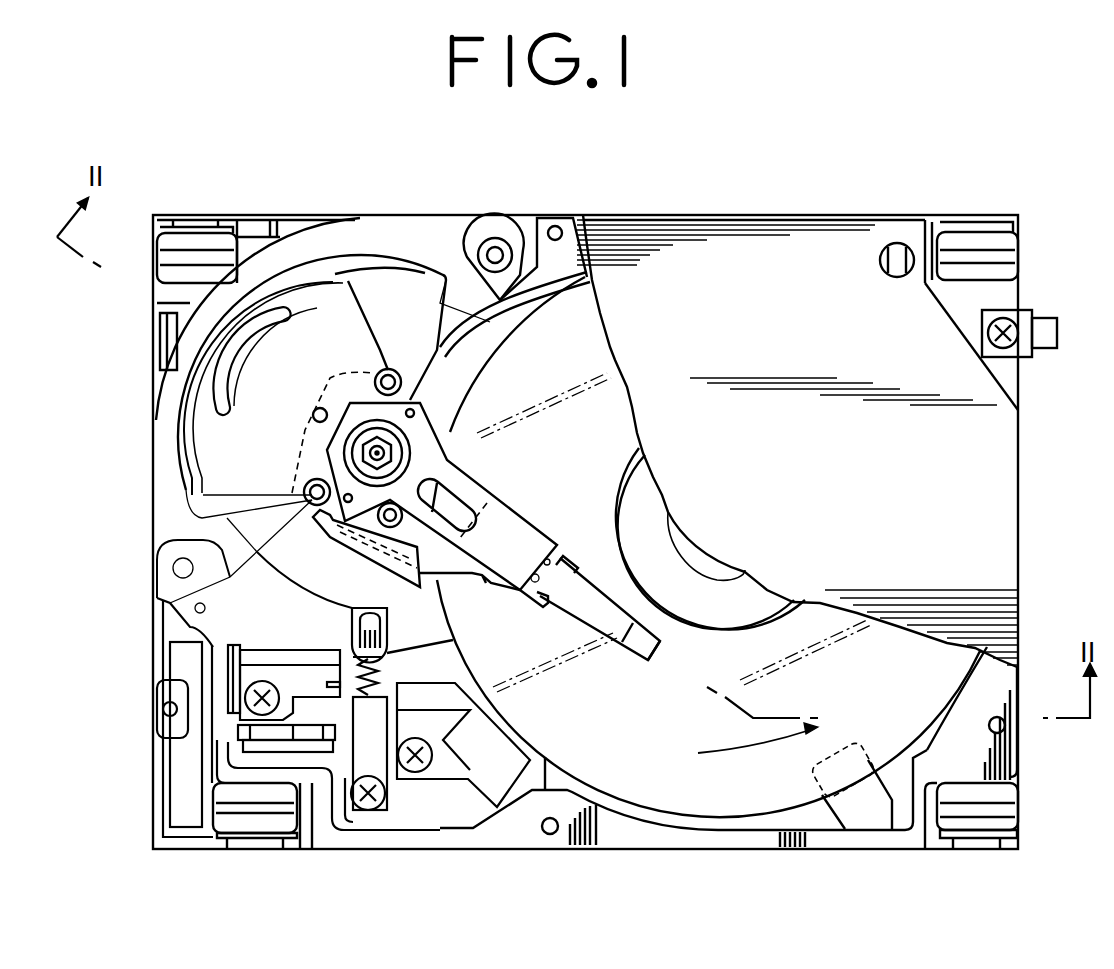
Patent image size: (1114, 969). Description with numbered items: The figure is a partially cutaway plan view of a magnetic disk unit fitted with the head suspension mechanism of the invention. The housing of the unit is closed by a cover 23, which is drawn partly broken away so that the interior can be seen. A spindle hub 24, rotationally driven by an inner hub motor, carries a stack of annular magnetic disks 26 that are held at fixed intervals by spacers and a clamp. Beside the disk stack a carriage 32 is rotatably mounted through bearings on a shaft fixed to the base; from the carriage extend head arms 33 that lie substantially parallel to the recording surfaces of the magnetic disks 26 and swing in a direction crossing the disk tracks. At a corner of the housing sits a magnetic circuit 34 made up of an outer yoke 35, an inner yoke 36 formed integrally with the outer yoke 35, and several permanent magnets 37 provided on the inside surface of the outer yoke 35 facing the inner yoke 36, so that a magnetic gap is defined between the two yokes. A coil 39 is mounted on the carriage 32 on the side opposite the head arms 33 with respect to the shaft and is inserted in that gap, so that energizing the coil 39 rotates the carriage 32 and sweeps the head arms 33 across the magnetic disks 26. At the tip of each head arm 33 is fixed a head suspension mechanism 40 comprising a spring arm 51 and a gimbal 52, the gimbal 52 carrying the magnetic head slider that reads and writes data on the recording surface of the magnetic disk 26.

The cover 23 is at (790, 255).
The spindle hub 24 is at (700, 640).
The magnetic disk 26 is at (698, 805).
The carriage 32 is at (376, 256).
The head arm 33 is at (468, 475).
The magnetic circuit 34 is at (258, 213).
The outer yoke 35 is at (163, 453).
The inner yoke 36 is at (235, 390).
The permanent magnet 37 is at (330, 280).
The coil 39 is at (240, 320).
The head suspension mechanism 40 is at (585, 551).
The spring arm 51 is at (565, 597).
The gimbal 52 is at (640, 650).